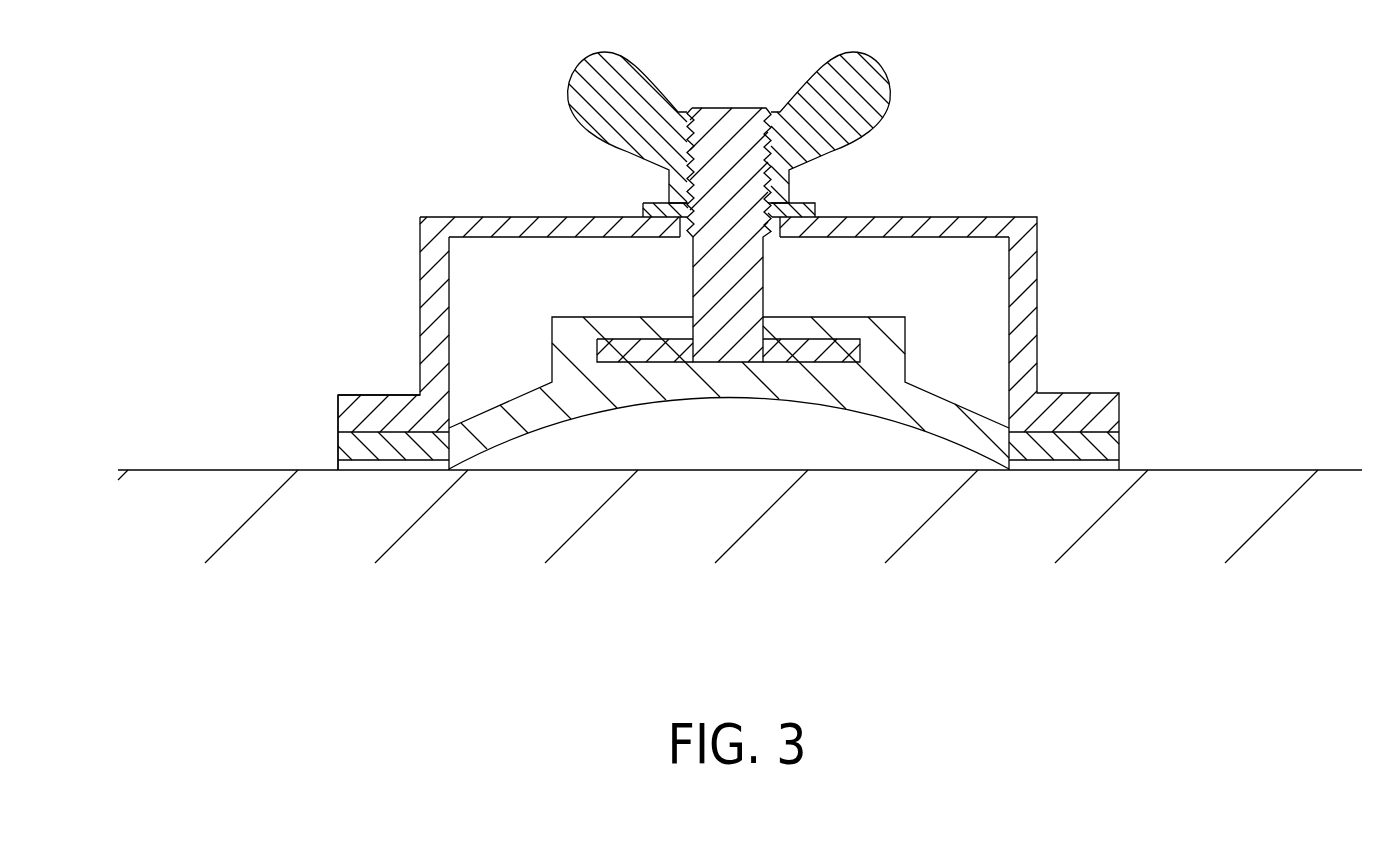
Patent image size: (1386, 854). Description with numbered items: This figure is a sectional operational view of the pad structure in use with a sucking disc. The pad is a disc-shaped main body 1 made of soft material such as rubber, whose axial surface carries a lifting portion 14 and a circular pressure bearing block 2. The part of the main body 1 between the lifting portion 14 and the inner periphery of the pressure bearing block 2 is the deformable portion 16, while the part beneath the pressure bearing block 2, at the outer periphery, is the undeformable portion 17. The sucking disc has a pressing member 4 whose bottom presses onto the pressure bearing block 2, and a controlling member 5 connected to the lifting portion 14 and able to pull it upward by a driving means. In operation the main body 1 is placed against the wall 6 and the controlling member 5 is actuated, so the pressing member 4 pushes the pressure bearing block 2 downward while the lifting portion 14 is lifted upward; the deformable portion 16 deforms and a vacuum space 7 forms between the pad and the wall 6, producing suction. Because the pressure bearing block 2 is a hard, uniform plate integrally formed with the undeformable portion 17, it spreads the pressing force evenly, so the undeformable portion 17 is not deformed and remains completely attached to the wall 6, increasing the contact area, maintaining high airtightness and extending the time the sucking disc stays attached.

The main body 1 is at (542, 317).
The pressure bearing block 2 is at (355, 432).
The pressing member 4 is at (955, 224).
The controlling member 5 is at (870, 67).
The wall 6 is at (218, 470).
The vacuum space 7 is at (845, 438).
The lifting portion 14 is at (725, 118).
The deformable portion 16 is at (555, 418).
The undeformable portion 17 is at (364, 466).